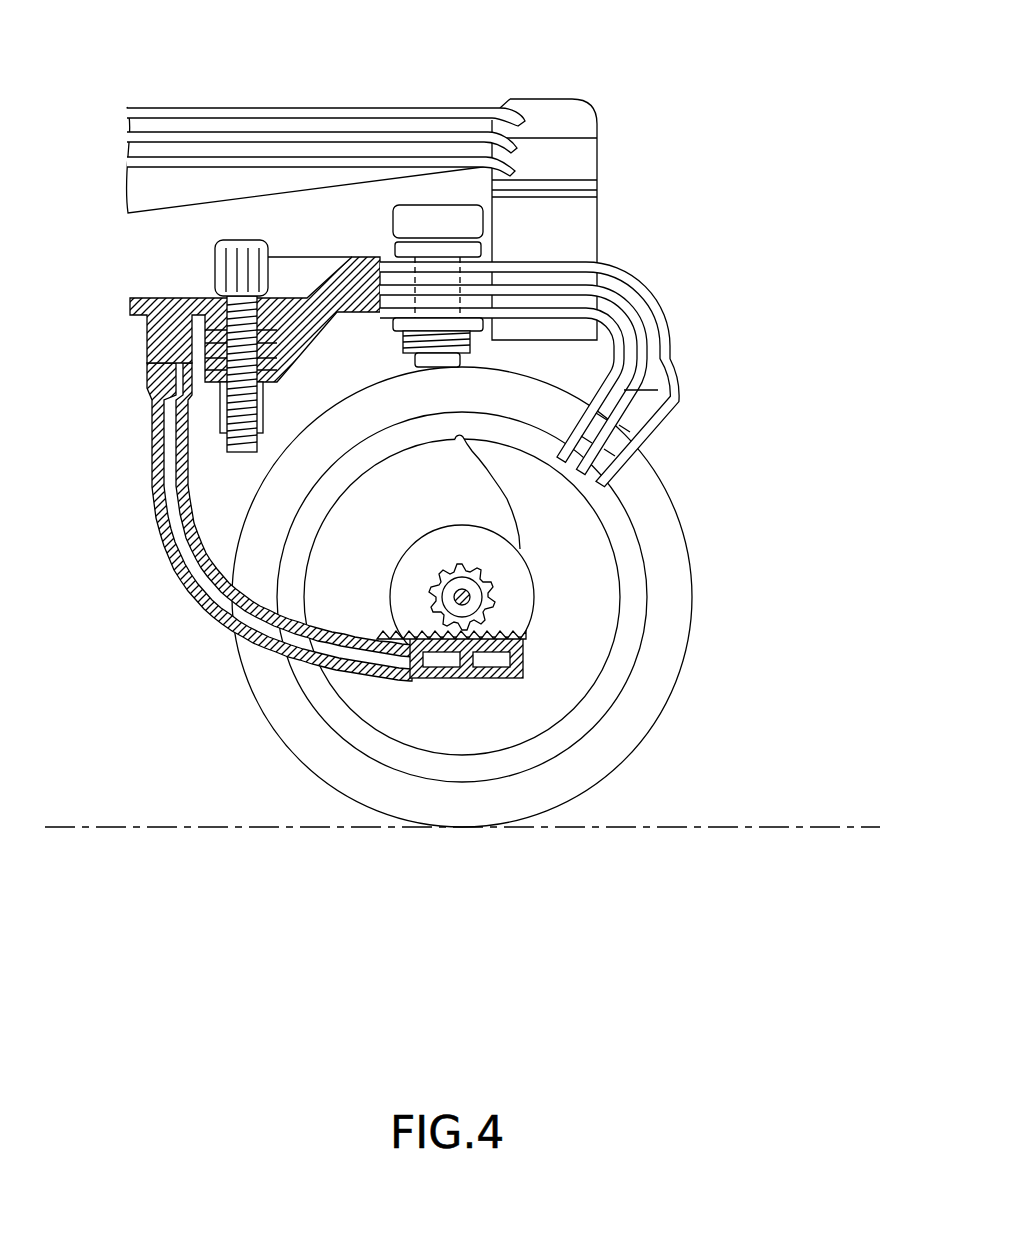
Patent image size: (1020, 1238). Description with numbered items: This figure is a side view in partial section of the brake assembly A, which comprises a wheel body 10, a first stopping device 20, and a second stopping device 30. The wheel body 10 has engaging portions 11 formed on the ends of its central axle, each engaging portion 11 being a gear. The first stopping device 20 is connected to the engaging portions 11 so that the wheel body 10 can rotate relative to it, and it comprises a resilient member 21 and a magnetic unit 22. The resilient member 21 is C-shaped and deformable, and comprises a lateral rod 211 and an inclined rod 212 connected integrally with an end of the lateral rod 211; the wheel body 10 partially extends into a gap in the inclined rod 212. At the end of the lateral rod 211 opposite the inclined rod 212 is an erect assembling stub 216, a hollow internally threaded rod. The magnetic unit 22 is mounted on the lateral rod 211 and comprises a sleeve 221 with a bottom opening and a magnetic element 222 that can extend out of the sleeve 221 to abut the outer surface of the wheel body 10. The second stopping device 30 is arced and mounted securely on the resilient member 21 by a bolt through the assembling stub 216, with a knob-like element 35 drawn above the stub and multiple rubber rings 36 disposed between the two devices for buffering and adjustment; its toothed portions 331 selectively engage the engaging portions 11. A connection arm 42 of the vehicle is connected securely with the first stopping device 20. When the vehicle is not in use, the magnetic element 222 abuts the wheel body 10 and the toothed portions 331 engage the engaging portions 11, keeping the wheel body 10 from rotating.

The wheel body 10 is at (287, 742).
The engaging portion 11 is at (487, 602).
The first stopping device 20 is at (580, 293).
The resilient member 21 is at (682, 334).
The lateral rod 211 is at (540, 262).
The inclined rod 212 is at (674, 419).
The magnetic unit 22 is at (426, 303).
The sleeve 221 is at (406, 247).
The magnetic element 222 is at (445, 363).
The second stopping device 30 is at (251, 466).
The toothed portion 331 is at (557, 615).
The knob 35 is at (232, 247).
The rubber ring 36 is at (208, 330).
The assembling stub 216 is at (226, 402).
The connection arm 42 is at (338, 98).
The brake assembly A is at (685, 740).